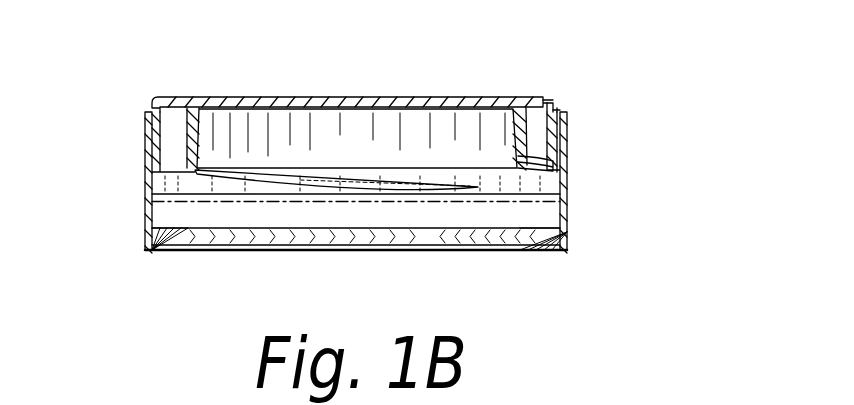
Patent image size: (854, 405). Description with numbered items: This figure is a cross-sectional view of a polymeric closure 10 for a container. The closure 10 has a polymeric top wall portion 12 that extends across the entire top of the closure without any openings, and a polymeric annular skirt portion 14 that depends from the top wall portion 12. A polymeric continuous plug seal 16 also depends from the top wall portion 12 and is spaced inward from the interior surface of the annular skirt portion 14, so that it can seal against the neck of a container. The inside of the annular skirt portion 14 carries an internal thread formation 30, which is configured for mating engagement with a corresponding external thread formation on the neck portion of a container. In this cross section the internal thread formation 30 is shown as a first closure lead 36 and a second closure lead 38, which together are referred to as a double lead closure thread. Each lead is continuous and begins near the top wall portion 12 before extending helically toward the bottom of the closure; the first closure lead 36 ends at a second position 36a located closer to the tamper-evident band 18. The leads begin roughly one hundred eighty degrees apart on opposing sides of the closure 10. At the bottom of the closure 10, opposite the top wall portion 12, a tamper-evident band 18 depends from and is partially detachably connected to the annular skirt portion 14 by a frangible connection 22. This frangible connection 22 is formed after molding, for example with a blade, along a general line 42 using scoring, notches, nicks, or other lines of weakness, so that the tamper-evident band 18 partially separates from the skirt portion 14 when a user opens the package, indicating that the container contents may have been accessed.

The polymeric closure 10 is at (647, 118).
The polymeric top wall portion 12 is at (384, 98).
The polymeric annular skirt portion 14 is at (141, 165).
The polymeric continuous plug seal 16 is at (536, 150).
The tamper-evident band 18 is at (567, 273).
The frangible connection 22 is at (567, 233).
The internal thread formation 30 is at (177, 173).
The first closure lead 36 is at (449, 183).
The second position 36a is at (466, 186).
The second closure lead 38 is at (558, 110).
The general line 42 is at (154, 253).